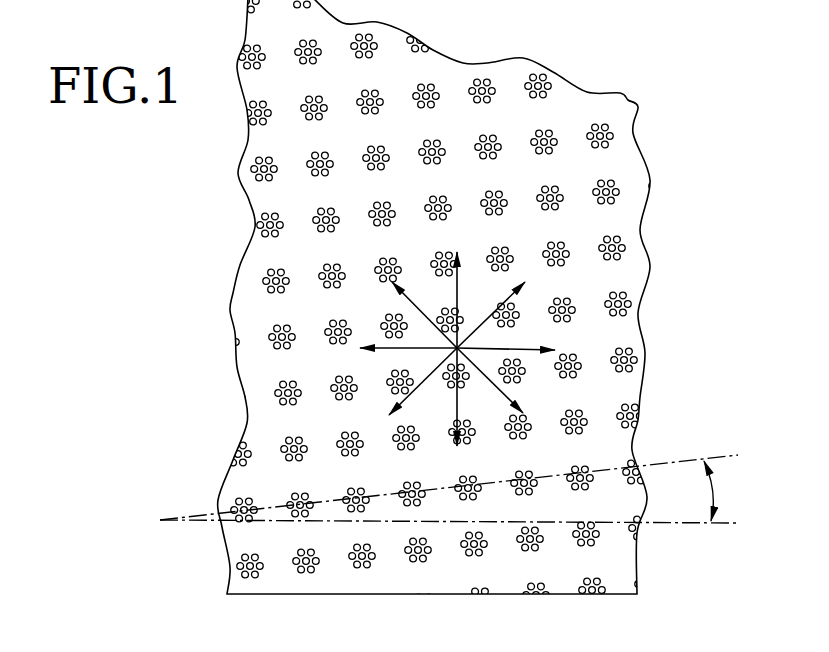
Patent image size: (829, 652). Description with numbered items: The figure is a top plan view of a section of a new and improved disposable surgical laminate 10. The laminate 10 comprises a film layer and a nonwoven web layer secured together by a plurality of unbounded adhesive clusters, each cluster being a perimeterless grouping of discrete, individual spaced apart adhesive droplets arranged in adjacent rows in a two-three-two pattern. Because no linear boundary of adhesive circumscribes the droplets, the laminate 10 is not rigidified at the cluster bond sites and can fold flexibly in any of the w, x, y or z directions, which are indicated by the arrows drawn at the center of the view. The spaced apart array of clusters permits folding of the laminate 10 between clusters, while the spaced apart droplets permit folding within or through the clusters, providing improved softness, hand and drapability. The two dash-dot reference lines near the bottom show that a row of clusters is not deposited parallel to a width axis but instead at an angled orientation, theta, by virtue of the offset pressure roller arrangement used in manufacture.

The disposable surgical laminate 10 is at (212, 349).
The w direction w is at (409, 300).
The x direction x is at (523, 348).
The y direction y is at (456, 289).
The z direction z is at (483, 322).